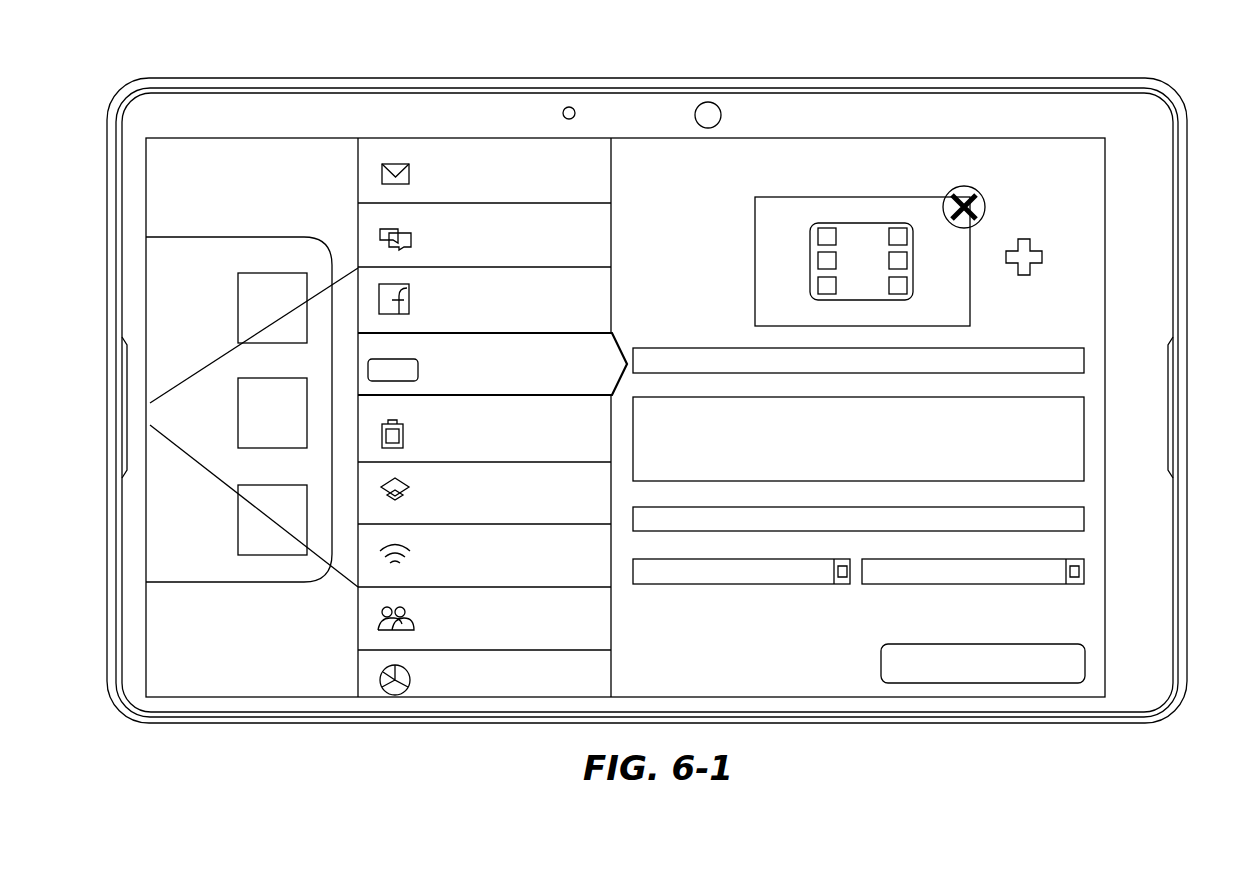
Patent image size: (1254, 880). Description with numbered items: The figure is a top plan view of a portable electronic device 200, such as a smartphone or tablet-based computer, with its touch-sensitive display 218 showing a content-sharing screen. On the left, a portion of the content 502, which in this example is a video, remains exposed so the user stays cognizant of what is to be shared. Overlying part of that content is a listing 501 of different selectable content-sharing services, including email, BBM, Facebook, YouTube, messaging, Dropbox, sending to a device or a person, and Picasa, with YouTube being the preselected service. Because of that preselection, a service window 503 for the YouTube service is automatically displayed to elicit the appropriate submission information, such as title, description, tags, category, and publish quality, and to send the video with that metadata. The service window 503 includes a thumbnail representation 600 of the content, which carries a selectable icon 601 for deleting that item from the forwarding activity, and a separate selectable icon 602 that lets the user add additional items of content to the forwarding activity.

The portable electronic device 200 is at (232, 724).
The touch-sensitive display 218 is at (1090, 180).
The listing 501 is at (532, 165).
The content 502 is at (248, 165).
The service window 503 is at (925, 364).
The thumbnail representation 600 is at (878, 210).
The selectable icon 601 is at (966, 186).
The selectable icon 602 is at (1022, 240).